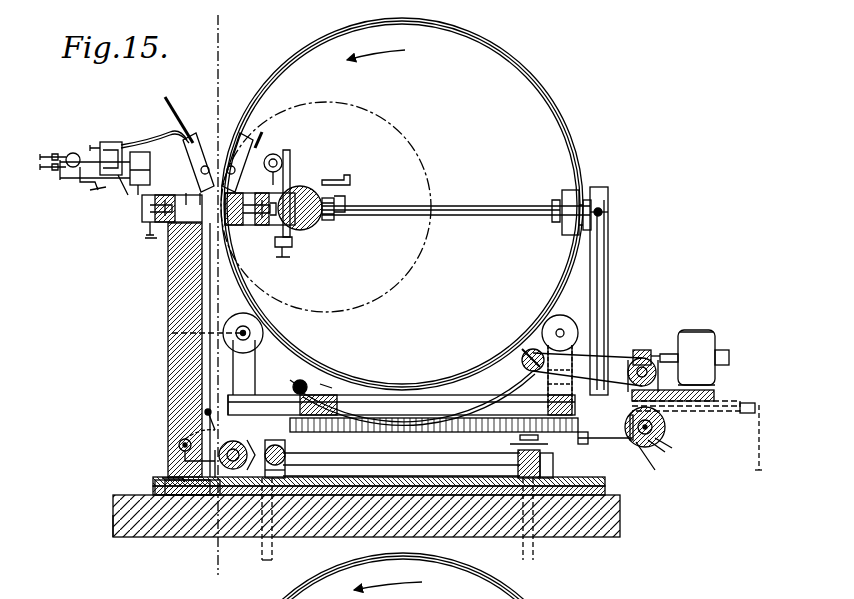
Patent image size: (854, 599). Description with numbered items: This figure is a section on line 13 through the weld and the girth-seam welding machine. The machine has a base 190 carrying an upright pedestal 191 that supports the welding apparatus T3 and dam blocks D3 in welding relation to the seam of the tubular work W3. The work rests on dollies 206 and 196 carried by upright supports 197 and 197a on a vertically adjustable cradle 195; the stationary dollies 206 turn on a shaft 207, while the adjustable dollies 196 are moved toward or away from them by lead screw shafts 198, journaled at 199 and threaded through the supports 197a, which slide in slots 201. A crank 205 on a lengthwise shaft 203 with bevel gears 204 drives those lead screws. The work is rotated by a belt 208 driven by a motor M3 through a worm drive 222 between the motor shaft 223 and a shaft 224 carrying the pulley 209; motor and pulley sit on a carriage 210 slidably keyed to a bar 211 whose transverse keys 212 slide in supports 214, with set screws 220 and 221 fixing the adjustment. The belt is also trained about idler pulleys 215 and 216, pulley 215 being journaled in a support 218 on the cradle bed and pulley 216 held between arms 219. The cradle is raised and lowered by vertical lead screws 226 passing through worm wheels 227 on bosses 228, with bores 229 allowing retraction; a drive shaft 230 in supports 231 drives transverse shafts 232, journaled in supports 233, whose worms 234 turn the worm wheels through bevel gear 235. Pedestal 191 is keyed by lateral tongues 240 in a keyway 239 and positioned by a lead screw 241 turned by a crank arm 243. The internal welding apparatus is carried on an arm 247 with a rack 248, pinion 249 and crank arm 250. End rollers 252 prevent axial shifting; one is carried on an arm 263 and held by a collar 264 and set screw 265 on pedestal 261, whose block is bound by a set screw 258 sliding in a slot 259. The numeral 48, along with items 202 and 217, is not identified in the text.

The section line 13 is at (186, 67).
The work W3 is at (527, 86).
The belt 208 is at (566, 134).
The arm 263 is at (477, 222).
The set screw 265 is at (553, 222).
The arm 247 is at (312, 192).
The rack 248 is at (326, 198).
The crank arm 250 is at (338, 176).
The pinion 249 is at (343, 196).
The dam blocks D3 is at (221, 222).
The welding apparatus T3 is at (78, 200).
The hose 48 is at (178, 108).
The slot 259 is at (600, 262).
The pedestal 261 is at (608, 292).
The rollers 252 is at (565, 190).
The collar 264 is at (562, 200).
The set screw 258 is at (612, 212).
The pedestal 191 is at (168, 384).
The shaft 207 is at (172, 333).
The dollies 206 is at (240, 318).
The slots 201 is at (414, 403).
The support 218 is at (308, 387).
The idler pulley 215 is at (326, 382).
The upright supports 197 is at (262, 372).
The upright supports 197a is at (545, 376).
The dollies 196 is at (572, 322).
The idler pulley 216 is at (526, 352).
The arms 219 is at (531, 349).
The lead screw shafts 198 is at (452, 434).
The shafts 232 is at (368, 455).
The lead screws 226 is at (288, 447).
The worm wheels 227 is at (290, 468).
The bosses 228 is at (345, 474).
The worms 234 is at (553, 449).
The supports 233 is at (555, 479).
The bores 229 is at (266, 552).
The journal 199 is at (590, 443).
The drive shaft 230 is at (220, 452).
The crank arm 243 is at (204, 412).
The lead screw 241 is at (180, 444).
The bevel gear 235 is at (183, 460).
The lateral tongues 240 is at (165, 478).
The keyway 239 is at (158, 490).
The cradle 195 is at (225, 404).
The base 190 is at (628, 497).
The supports 231 is at (172, 533).
The motor M3 is at (703, 357).
The shaft 224 is at (696, 338).
The set screw 220 is at (676, 392).
The motor shaft 223 is at (666, 356).
The worm drive 222 is at (646, 352).
The pulley 209 is at (625, 380).
The bar 211 is at (605, 369).
The transverse keys 212 is at (718, 393).
The carriage 210 is at (720, 400).
The set screw 221 is at (745, 413).
The shaft 203 is at (665, 426).
The bevel gears 204 is at (658, 434).
The crank 205 is at (672, 448).
The lever 202 is at (645, 447).
The supports 214 is at (756, 430).
The stop 217 is at (757, 470).